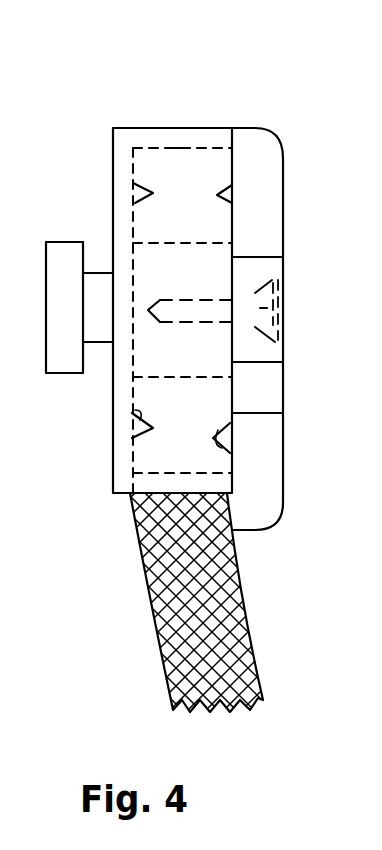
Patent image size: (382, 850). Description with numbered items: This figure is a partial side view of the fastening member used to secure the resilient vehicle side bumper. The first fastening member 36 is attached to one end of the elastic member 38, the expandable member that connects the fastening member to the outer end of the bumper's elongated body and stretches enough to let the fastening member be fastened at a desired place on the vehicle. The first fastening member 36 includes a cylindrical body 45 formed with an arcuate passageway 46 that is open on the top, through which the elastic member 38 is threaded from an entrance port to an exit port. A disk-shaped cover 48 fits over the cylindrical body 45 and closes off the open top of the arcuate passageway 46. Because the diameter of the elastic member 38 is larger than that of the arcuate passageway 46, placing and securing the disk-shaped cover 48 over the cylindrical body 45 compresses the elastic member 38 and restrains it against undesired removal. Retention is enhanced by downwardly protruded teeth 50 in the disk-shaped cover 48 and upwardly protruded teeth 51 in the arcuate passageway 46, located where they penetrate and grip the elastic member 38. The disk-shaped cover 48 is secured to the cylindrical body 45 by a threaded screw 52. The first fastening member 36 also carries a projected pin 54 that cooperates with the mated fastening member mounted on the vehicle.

The first fastening member 36 is at (112, 494).
The elastic member 38 is at (150, 595).
The cylindrical body 45 is at (120, 440).
The arcuate passageway 46 is at (181, 178).
The disk-shaped cover 48 is at (262, 496).
The downwardly protruded teeth 50 is at (225, 175).
The upwardly protruded teeth 51 is at (147, 170).
The threaded screw 52 is at (288, 292).
The projected pin 54 is at (62, 373).